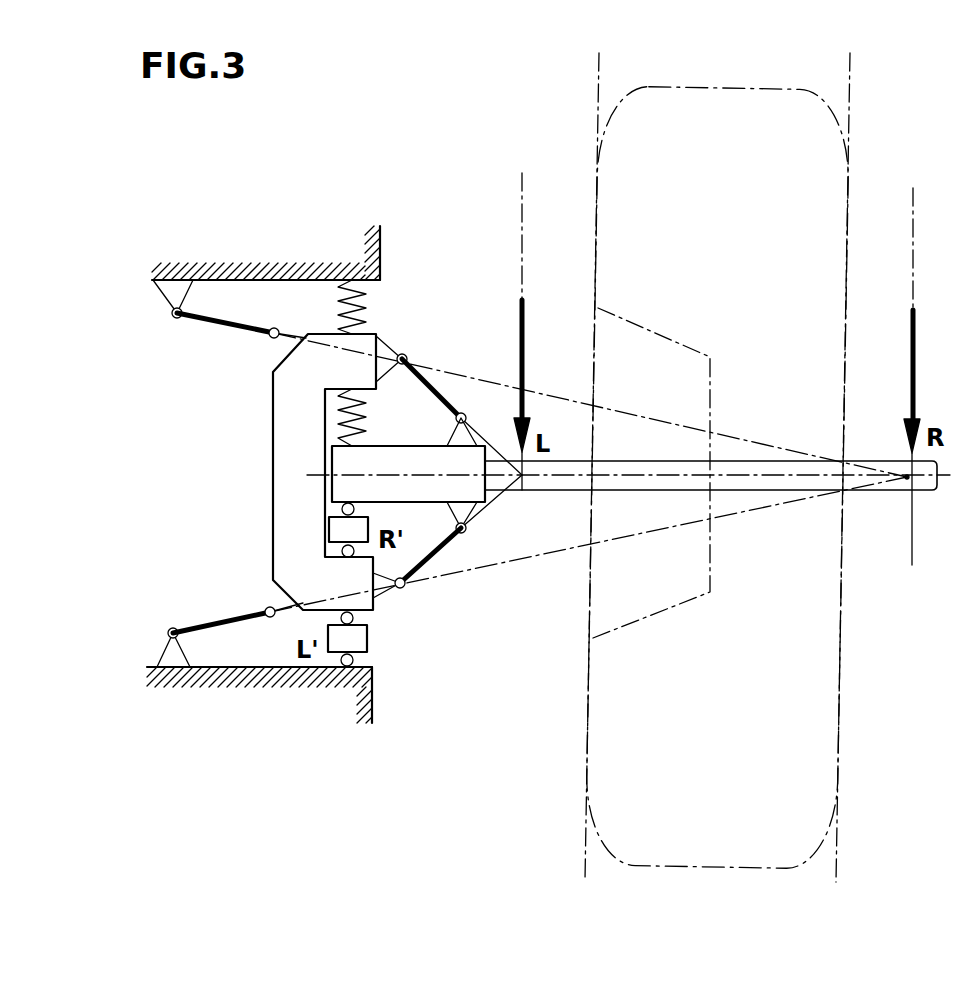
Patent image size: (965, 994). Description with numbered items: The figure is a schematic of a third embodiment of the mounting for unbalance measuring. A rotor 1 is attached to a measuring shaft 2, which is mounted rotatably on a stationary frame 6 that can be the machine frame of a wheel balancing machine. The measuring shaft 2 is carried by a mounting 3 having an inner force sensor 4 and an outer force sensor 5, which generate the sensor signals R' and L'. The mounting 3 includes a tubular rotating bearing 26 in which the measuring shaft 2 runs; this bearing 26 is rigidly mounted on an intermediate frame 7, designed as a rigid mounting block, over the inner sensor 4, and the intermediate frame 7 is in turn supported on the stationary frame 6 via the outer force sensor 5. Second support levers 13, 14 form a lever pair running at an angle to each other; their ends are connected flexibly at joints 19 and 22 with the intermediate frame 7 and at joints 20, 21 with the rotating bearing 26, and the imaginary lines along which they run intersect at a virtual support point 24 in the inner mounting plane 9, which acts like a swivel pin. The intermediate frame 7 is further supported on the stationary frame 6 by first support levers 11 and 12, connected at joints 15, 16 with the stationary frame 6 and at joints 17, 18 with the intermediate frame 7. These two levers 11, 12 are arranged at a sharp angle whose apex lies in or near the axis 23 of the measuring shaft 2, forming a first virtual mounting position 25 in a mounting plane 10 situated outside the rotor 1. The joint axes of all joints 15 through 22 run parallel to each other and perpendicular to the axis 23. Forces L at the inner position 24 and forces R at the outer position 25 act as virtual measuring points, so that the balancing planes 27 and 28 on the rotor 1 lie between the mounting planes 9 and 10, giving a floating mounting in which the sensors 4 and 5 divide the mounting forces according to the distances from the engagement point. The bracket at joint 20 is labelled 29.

The rotor 1 is at (712, 76).
The measuring shaft 2 is at (750, 490).
The mounting 3 is at (208, 472).
The inner force sensor 4 is at (329, 528).
The outer force sensor 5 is at (367, 640).
The stationary frame 6 is at (269, 250).
The intermediate frame 7 is at (300, 492).
The mounting plane 9 is at (522, 235).
The mounting plane 10 is at (913, 238).
The first support lever 11 is at (226, 325).
The first support lever 12 is at (216, 623).
The second support lever 13 is at (436, 380).
The second support lever 14 is at (432, 562).
The joint 15 is at (177, 318).
The joint 16 is at (172, 628).
The joint 17 is at (273, 338).
The joint 18 is at (268, 607).
The joint 19 is at (404, 354).
The joint 20 is at (463, 412).
The joint 21 is at (465, 540).
The joint 22 is at (401, 590).
The axis 23 is at (775, 477).
The virtual support point 24 is at (525, 478).
The first virtual mounting position 25 is at (905, 480).
The tubular rotating bearing 26 is at (332, 457).
The balancing plane 27 is at (850, 76).
The balancing plane 28 is at (599, 78).
The support bracket 29 is at (455, 438).